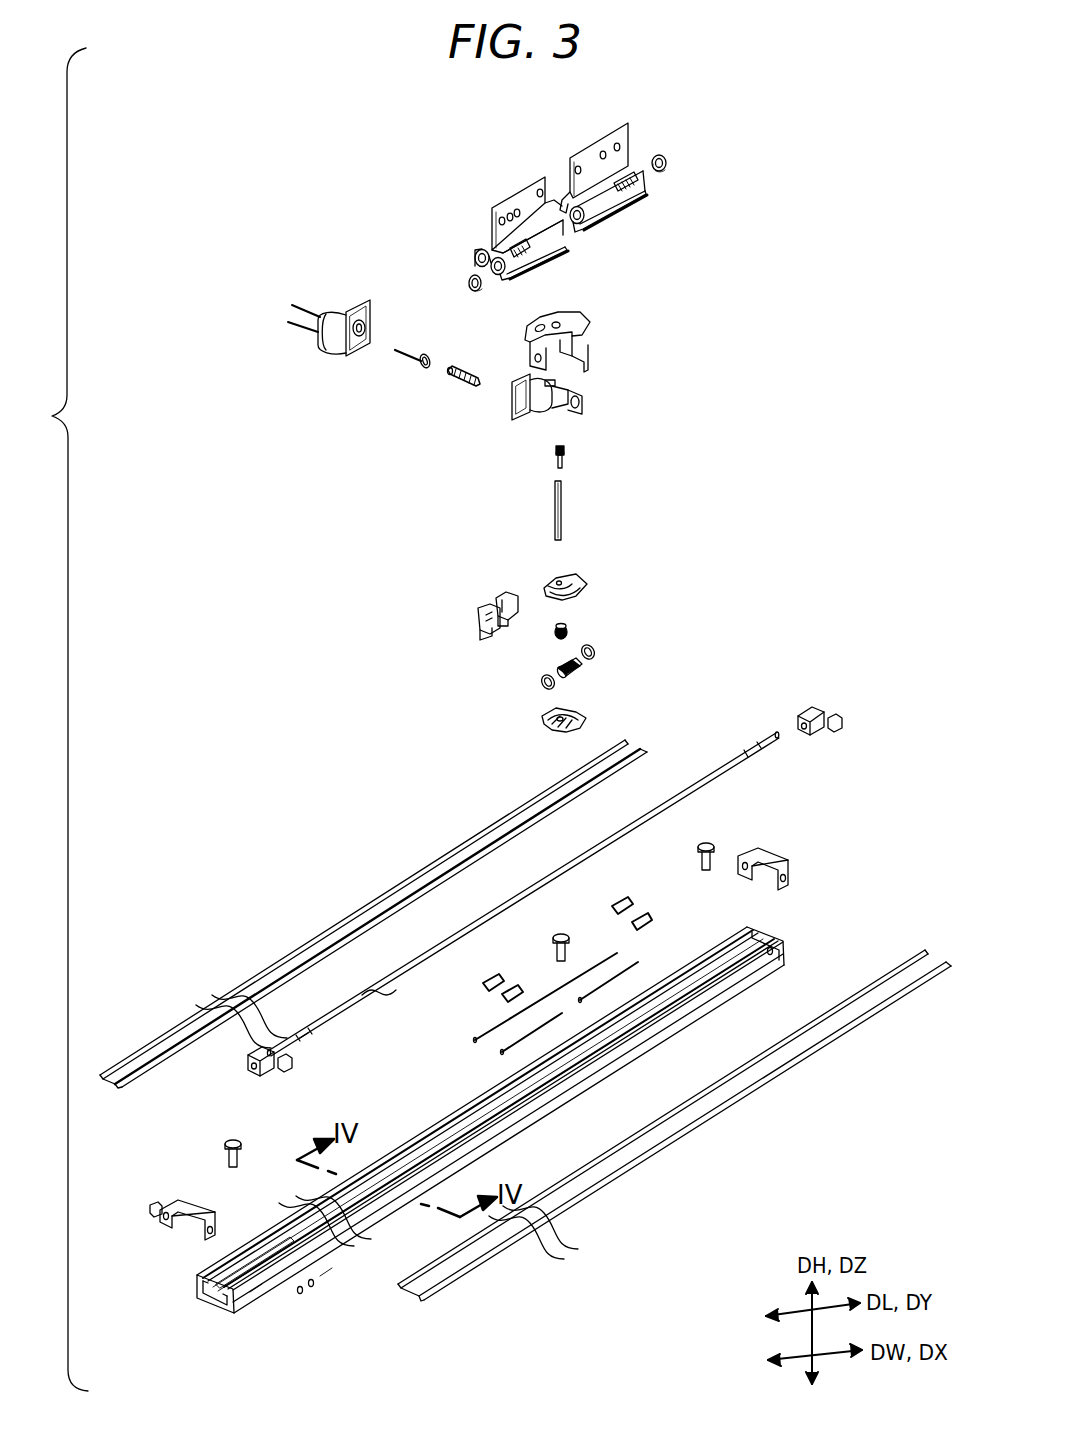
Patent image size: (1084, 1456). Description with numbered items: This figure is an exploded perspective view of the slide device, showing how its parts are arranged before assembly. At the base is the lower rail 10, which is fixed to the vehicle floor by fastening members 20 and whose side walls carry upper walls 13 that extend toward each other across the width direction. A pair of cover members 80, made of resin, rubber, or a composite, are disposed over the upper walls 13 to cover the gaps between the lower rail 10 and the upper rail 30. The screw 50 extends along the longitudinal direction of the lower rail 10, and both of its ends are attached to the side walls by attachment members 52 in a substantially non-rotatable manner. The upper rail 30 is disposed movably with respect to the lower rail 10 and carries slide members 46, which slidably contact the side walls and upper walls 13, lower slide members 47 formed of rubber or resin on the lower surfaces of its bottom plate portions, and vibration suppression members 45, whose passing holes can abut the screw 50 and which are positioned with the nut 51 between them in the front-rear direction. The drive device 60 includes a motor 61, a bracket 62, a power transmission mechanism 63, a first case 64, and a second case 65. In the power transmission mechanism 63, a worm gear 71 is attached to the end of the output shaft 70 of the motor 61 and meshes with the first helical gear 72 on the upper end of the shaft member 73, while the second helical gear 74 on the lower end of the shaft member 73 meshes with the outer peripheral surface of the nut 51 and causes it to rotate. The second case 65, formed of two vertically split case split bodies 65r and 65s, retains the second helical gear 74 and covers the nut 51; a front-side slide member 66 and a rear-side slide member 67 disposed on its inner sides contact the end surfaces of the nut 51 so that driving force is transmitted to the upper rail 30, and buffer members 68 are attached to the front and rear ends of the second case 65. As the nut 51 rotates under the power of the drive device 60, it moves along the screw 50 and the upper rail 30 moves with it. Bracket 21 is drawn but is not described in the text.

The lower rail 10 is at (825, 943).
The upper wall 13 is at (755, 920).
The fastening member 20 is at (706, 842).
The mounting bracket 21 is at (778, 856).
The upper rail 30 is at (678, 126).
The vibration suppression member 45 is at (672, 163).
The slide member 46 is at (645, 914).
The lower slide member 47 is at (636, 963).
The screw 50 is at (720, 760).
The nut 51 is at (578, 672).
The attachment member 52 is at (806, 712).
The drive device 60 is at (258, 300).
The motor 61 is at (343, 352).
The bracket 62 is at (578, 318).
The power transmission mechanism 63 is at (668, 494).
The first case 64 is at (578, 400).
The second case 65 is at (638, 566).
The case split body 65r is at (576, 578).
The case split body 65s is at (590, 721).
The front-side slide member 66 is at (538, 683).
The rear-side slide member 67 is at (596, 654).
The buffer member 68 is at (507, 594).
The output shaft 70 is at (412, 361).
The worm gear 71 is at (468, 385).
The first helical gear 72 is at (572, 456).
The shaft member 73 is at (566, 497).
The second helical gear 74 is at (570, 628).
The cover member 80 is at (384, 896).